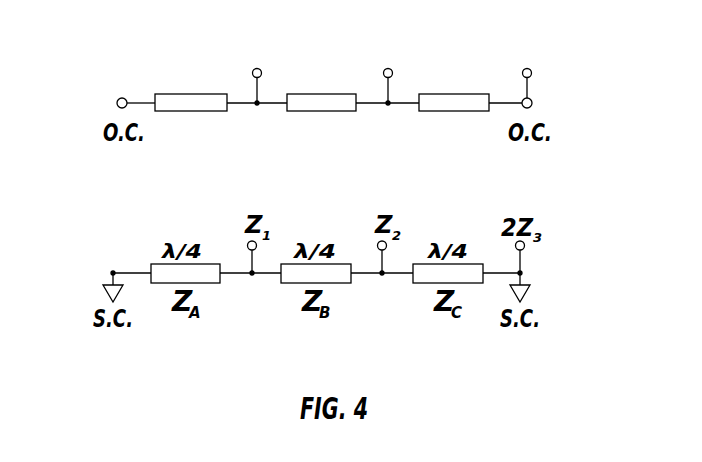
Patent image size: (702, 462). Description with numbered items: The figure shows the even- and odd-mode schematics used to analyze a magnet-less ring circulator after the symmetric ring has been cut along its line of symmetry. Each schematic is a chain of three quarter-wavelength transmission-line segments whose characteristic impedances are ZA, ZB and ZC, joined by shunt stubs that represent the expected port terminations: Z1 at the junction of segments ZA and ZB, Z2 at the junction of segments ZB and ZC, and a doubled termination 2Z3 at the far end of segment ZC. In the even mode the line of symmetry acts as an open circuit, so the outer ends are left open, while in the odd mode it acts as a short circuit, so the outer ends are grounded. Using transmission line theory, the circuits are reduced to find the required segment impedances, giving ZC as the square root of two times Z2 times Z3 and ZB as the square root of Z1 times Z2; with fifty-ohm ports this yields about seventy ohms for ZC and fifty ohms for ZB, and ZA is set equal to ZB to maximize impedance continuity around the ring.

The termination impedance at port one Z1 is at (262, 72).
The termination impedance at port two Z2 is at (393, 72).
The doubled termination impedance at port three 2Z3 is at (528, 70).
The ring segment characteristic impedance A ZA is at (191, 111).
The ring segment characteristic impedance B ZB is at (321, 111).
The ring segment characteristic impedance C ZC is at (454, 111).